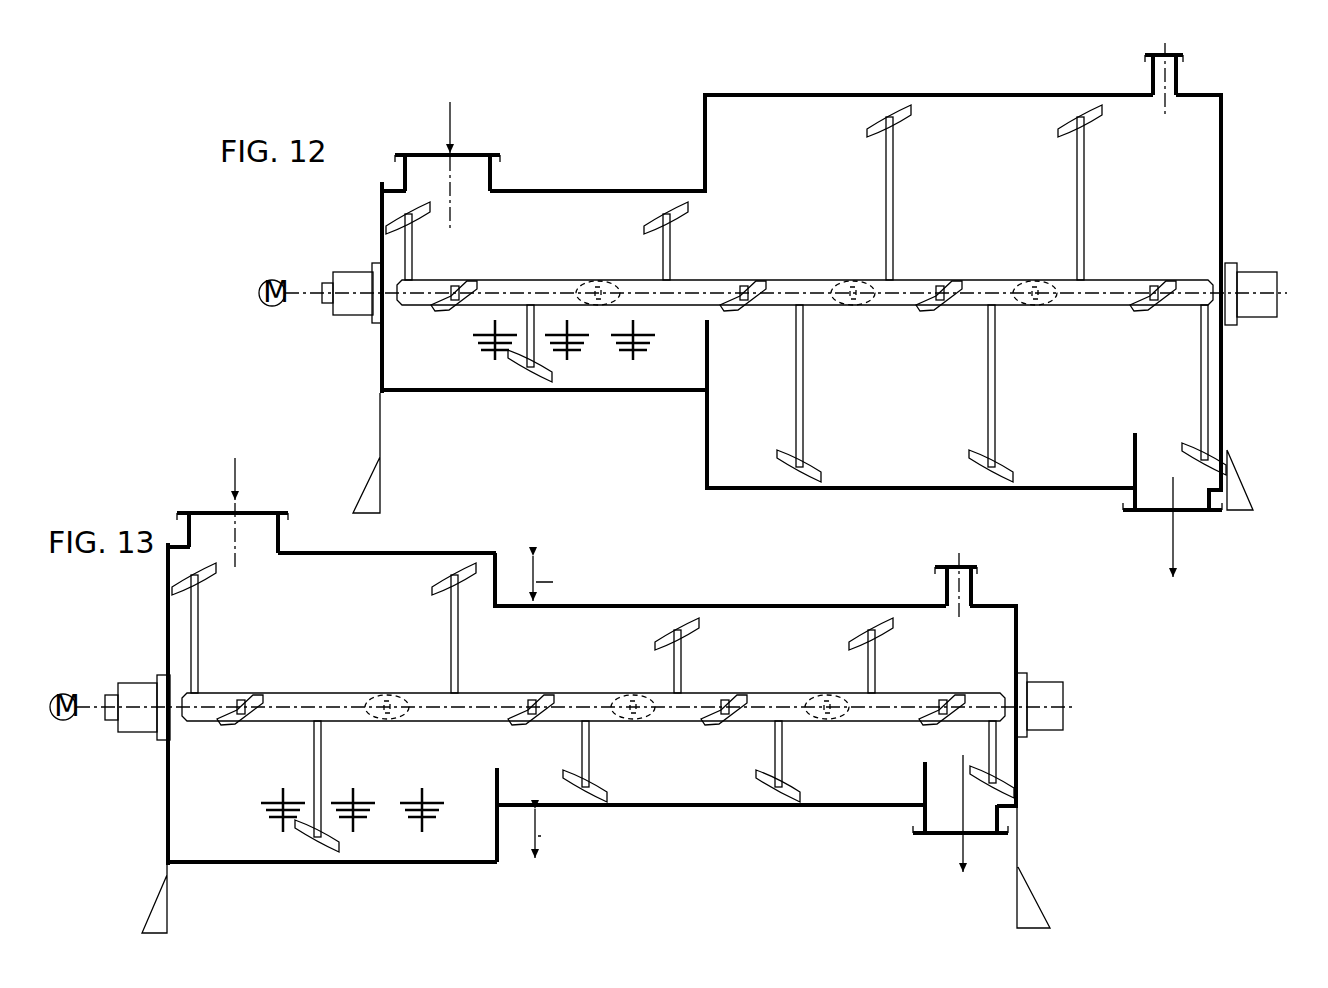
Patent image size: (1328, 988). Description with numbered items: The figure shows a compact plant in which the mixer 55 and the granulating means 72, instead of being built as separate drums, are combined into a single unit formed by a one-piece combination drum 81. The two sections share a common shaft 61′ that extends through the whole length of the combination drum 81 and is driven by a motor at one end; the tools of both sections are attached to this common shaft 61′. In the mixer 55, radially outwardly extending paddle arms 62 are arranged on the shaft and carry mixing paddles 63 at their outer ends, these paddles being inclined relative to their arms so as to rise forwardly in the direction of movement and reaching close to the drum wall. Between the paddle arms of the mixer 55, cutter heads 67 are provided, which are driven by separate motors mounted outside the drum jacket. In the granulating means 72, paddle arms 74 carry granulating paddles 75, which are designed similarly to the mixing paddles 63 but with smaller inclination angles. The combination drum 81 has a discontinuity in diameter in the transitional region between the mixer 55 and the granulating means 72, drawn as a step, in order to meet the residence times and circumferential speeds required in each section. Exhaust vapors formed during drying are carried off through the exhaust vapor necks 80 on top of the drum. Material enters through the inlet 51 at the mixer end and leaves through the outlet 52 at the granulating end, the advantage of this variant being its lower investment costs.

In FIG. 12, the inlet 51 is at (453, 118).
In FIG. 13, the inlet 51 is at (237, 485).
In FIG. 12, the outlet 52 is at (1170, 527).
In FIG. 13, the outlet 52 is at (960, 840).
In FIG. 12, the mixing drum 55 is at (569, 189).
In FIG. 13, the mixing drum 55 is at (338, 870).
In FIG. 12, the common shaft 61′ is at (723, 290).
In FIG. 13, the common shaft 61′ is at (482, 695).
In FIG. 13, the paddle arm 62 is at (198, 638).
In FIG. 13, the mixing paddle 63 is at (203, 572).
In FIG. 12, the cutter head 67 is at (475, 352).
In FIG. 12, the granulating means 72 is at (950, 93).
In FIG. 13, the granulating means 72 is at (773, 808).
In FIG. 13, the paddle arm 74 is at (682, 668).
In FIG. 13, the granulating paddle 75 is at (692, 622).
In FIG. 12, the exhaust vapor neck 80 is at (1176, 72).
In FIG. 13, the exhaust vapor neck 80 is at (962, 590).
In FIG. 12, the combination drum 81 is at (760, 490).
In FIG. 13, the combination drum 81 is at (638, 808).